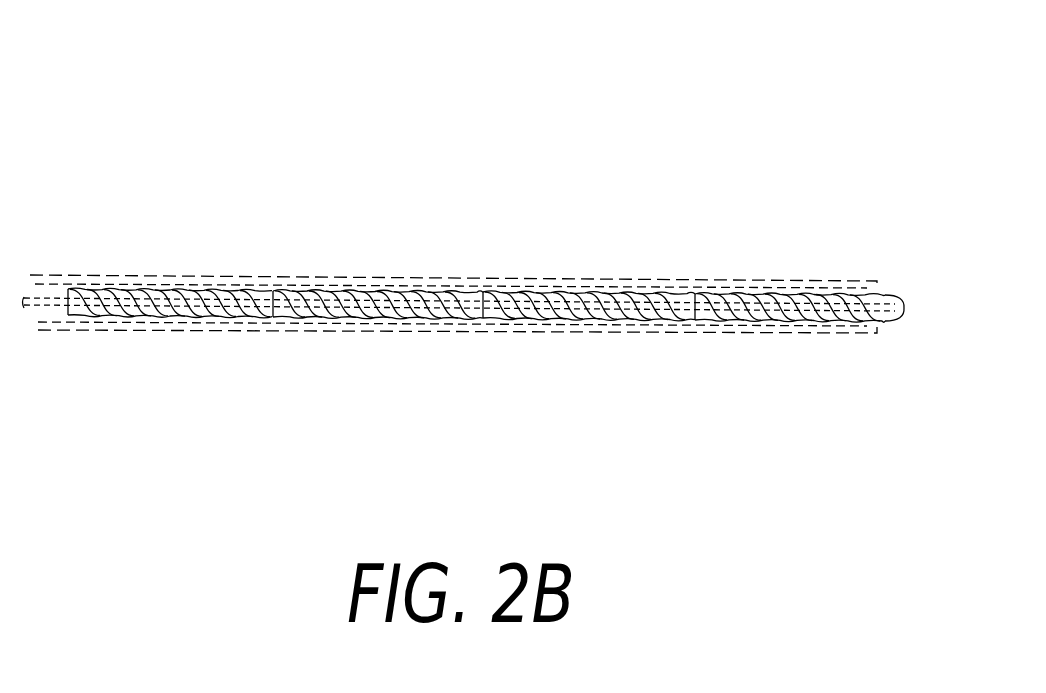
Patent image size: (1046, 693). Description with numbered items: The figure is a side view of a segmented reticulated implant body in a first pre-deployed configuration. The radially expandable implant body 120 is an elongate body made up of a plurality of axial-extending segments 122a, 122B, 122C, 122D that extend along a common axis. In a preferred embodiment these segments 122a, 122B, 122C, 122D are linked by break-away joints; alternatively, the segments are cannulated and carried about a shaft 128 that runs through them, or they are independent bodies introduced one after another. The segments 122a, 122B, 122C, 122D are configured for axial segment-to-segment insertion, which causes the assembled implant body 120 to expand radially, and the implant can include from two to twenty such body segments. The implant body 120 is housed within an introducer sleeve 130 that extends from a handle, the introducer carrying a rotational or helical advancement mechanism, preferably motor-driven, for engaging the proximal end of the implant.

The radially expandable implant body 120 is at (673, 117).
The axial-extending segment 122a is at (747, 293).
The axial-extending segment 122B is at (597, 291).
The axial-extending segment 122C is at (397, 290).
The axial-extending segment 122D is at (226, 289).
The shaft 128 is at (53, 290).
The introducer sleeve 130 is at (610, 335).